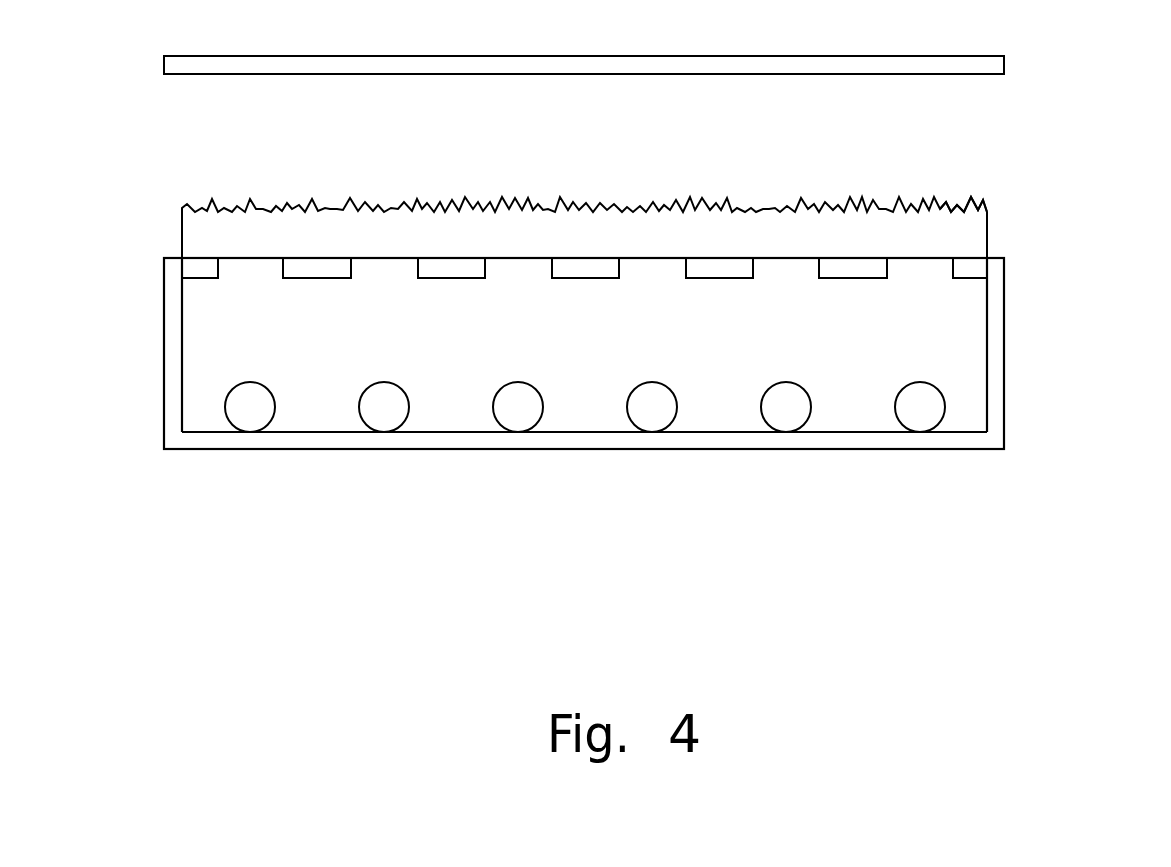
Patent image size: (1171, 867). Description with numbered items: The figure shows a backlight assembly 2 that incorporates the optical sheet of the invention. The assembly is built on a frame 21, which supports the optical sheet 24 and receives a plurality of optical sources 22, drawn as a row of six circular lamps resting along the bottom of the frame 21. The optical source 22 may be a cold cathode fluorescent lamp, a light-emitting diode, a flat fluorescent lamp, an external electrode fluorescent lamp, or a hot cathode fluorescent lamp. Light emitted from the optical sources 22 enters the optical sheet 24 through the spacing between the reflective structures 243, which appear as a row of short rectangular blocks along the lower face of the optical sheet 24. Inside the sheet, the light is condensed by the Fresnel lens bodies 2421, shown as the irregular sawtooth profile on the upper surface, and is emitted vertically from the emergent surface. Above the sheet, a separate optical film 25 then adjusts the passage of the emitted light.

The backlight module 2 is at (1097, 622).
The frame 21 is at (943, 443).
The optical sources 22 is at (928, 400).
The optical sheet 24 is at (943, 232).
The Fresnel lens bodies 2421 is at (950, 205).
The reflective structures 243 is at (845, 270).
The optical film 25 is at (967, 67).